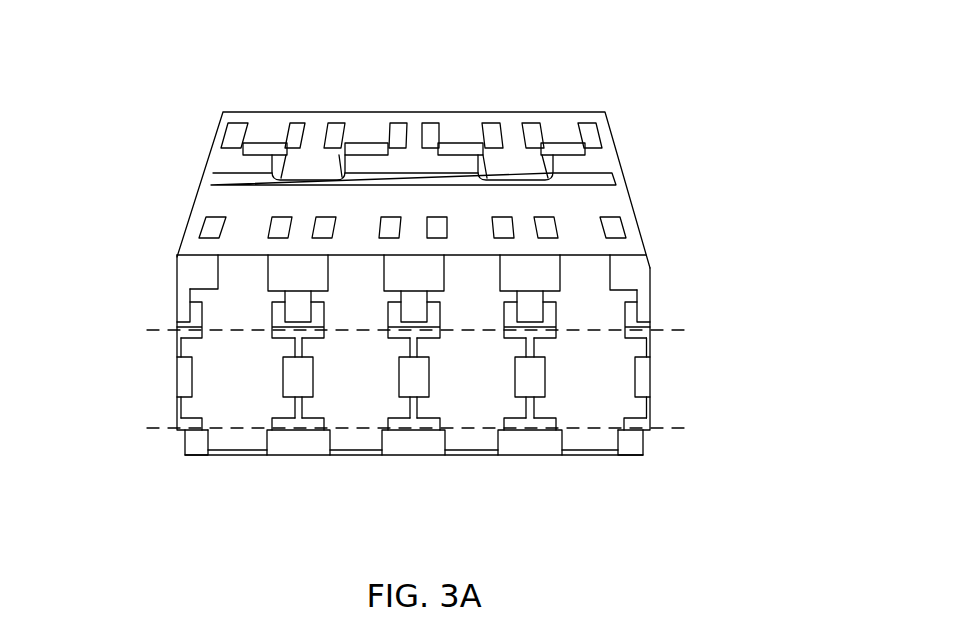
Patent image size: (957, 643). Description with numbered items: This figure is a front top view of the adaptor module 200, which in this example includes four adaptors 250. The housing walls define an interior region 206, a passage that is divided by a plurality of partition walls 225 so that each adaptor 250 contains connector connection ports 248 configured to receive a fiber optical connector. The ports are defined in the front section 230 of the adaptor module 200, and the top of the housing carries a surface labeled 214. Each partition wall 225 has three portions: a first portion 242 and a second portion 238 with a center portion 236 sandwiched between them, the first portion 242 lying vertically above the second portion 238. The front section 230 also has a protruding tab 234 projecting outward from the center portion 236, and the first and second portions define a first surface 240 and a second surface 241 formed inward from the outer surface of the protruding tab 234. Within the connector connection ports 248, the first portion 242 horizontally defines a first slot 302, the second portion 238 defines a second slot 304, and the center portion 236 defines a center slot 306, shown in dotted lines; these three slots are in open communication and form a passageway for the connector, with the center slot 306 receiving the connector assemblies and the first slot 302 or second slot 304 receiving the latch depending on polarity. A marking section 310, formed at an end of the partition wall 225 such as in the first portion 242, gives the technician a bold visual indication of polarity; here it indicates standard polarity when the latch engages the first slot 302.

The adaptor module 200 is at (482, 63).
The top surface 214 is at (371, 123).
The front section 230 is at (600, 203).
The adaptor 250 is at (348, 268).
The first slot 302 is at (245, 288).
The marking section 310 is at (538, 280).
The first surface 240 is at (529, 305).
The first portion 242 is at (638, 325).
The center portion 236 is at (565, 376).
The connector connection port 248 is at (196, 374).
The center slot 306 is at (233, 382).
The second surface 241 is at (632, 447).
The second slot 304 is at (238, 444).
The interior region 206 is at (348, 440).
The partition wall 225 is at (508, 443).
The second portion 238 is at (550, 443).
The protruding tab 234 is at (520, 392).